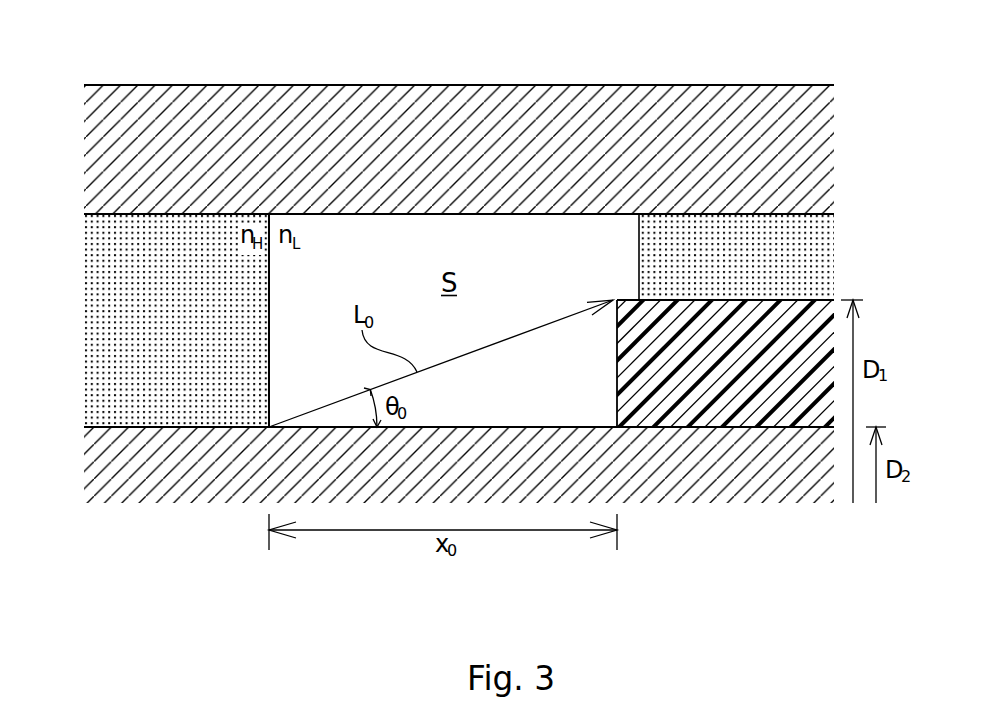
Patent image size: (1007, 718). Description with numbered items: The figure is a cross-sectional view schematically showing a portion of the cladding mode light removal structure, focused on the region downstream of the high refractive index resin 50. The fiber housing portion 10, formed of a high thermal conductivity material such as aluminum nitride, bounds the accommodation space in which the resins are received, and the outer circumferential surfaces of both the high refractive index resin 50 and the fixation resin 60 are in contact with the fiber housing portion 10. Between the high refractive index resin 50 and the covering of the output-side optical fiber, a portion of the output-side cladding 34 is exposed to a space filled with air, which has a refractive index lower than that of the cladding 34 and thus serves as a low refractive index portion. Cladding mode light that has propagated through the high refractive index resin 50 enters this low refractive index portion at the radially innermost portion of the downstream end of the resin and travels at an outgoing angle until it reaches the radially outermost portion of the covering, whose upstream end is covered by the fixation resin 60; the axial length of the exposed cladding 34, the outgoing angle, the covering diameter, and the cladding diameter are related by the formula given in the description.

The fiber housing portion 10 is at (459, 105).
The cladding 34 is at (725, 485).
The high refractive index resin 50 is at (101, 314).
The fixation resin 60 is at (807, 247).